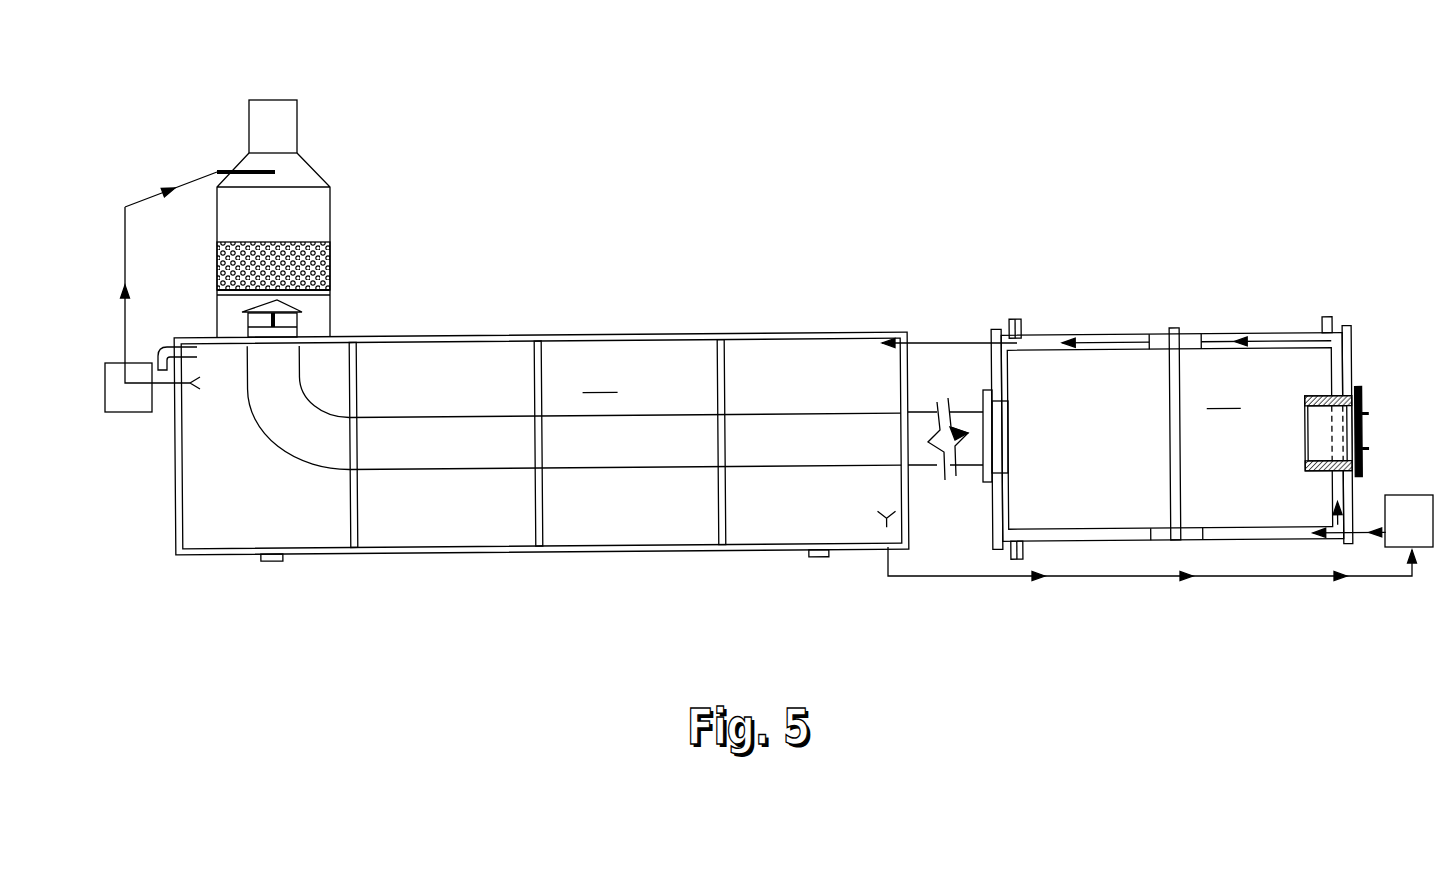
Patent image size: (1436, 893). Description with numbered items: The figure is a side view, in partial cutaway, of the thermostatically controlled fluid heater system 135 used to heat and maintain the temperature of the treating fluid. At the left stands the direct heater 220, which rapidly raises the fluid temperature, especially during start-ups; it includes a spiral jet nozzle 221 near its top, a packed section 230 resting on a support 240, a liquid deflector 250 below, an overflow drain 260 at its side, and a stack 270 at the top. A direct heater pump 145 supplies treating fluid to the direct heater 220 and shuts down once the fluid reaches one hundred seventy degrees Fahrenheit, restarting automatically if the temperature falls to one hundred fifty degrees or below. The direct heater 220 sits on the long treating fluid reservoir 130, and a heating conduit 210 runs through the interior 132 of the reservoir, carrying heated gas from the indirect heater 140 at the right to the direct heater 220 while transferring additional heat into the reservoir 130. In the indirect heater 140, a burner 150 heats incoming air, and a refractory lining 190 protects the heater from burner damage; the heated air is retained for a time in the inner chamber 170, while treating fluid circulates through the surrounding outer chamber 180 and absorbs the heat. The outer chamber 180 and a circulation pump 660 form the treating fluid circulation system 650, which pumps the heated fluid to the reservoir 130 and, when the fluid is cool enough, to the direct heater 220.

The fluid heater system 135 is at (710, 152).
The treating fluid reservoir 130 is at (638, 317).
The interior 132 is at (599, 381).
The indirect heater 140 is at (1199, 293).
The direct heater pump 145 is at (133, 413).
The burner 150 is at (1358, 427).
The inner chamber 170 is at (1224, 397).
The outer chamber 180 is at (1228, 333).
The refractory lining 190 is at (1343, 397).
The heating conduit 210 is at (753, 415).
The direct heater 220 is at (334, 136).
The spiral jet nozzle 221 is at (275, 172).
The packed section 230 is at (320, 252).
The support 240 is at (330, 290).
The liquid deflector 250 is at (297, 302).
The overflow drain 260 is at (162, 353).
The stack 270 is at (248, 120).
The treating fluid circulation system 650 is at (1376, 588).
The circulation pump 660 is at (1427, 534).